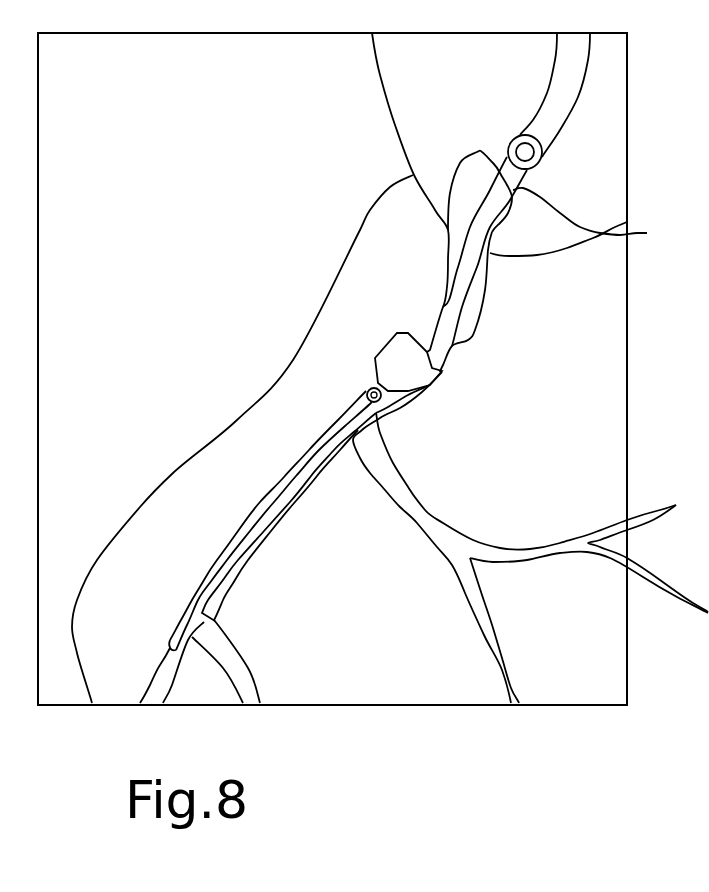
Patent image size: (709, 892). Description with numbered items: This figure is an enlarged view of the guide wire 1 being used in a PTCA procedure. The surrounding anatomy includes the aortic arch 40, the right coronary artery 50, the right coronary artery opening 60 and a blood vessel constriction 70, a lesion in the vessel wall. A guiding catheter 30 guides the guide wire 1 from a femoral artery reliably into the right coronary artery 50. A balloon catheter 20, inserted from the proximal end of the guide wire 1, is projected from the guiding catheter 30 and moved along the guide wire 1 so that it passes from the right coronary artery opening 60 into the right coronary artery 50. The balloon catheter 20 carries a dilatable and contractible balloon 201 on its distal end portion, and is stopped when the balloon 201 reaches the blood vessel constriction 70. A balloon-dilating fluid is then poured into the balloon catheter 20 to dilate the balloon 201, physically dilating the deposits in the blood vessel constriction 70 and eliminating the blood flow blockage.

The guide wire 1 is at (226, 548).
The balloon catheter 20 is at (466, 293).
The guiding catheter 30 is at (577, 105).
The aortic arch 40 is at (396, 83).
The right coronary artery 50 is at (447, 275).
The right coronary artery opening 60 is at (637, 233).
The blood vessel constriction 70 is at (423, 390).
The balloon 201 is at (380, 370).